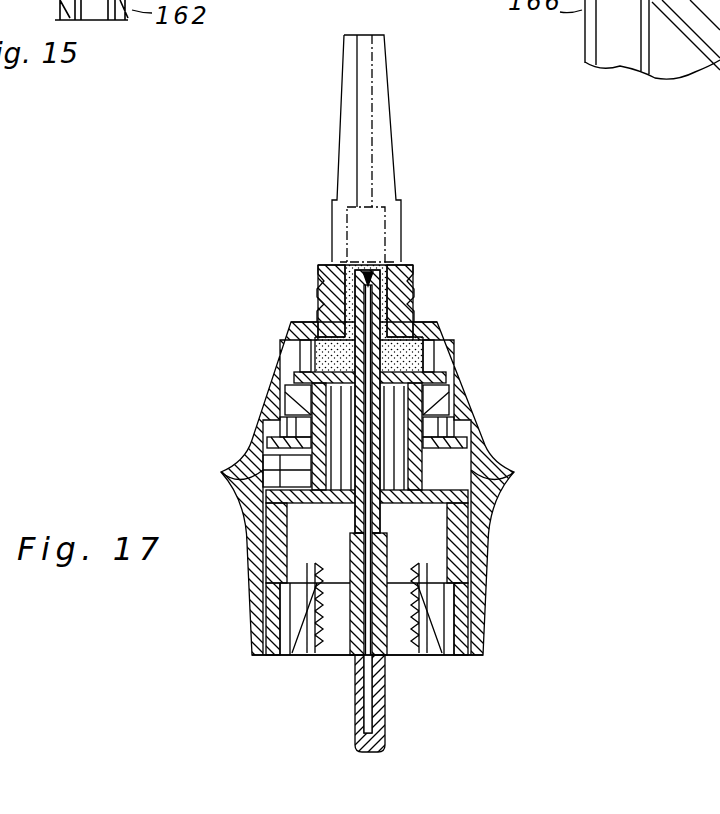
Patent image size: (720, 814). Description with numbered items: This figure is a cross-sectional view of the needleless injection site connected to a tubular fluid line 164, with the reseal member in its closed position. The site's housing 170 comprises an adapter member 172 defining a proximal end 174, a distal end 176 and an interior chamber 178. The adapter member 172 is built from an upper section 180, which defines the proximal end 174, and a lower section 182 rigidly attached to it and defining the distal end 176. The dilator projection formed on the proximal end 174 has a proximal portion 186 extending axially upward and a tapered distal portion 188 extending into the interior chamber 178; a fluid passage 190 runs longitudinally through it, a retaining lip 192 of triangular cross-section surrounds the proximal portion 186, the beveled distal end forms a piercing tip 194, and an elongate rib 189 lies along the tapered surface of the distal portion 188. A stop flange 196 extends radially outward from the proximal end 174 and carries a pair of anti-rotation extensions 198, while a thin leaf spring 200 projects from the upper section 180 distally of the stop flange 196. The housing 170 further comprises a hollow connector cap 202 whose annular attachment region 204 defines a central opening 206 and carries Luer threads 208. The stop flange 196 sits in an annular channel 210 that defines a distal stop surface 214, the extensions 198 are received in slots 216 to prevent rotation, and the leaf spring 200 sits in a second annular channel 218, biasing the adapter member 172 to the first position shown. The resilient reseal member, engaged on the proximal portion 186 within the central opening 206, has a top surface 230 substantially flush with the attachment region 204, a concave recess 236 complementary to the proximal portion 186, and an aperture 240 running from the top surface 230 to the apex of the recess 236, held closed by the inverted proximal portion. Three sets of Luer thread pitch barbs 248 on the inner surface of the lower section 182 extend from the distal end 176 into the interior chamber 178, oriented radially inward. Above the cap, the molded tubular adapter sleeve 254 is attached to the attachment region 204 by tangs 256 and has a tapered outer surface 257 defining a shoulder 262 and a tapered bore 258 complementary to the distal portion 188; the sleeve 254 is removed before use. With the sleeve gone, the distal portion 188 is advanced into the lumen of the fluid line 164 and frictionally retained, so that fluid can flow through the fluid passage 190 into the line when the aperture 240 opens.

The tubular fluid line 164 is at (357, 672).
The housing 170 is at (512, 507).
The adapter member 172 is at (500, 496).
The proximal end 174 is at (443, 358).
The distal end 176 is at (268, 657).
The interior chamber 178 is at (430, 546).
The upper section 180 is at (300, 428).
The lower section 182 is at (470, 634).
The proximal portion 186 is at (402, 302).
The distal portion 188 is at (455, 450).
The elongate rib 189 is at (337, 472).
The fluid passage 190 is at (310, 341).
The retaining lip 192 is at (336, 319).
The piercing tip 194 is at (385, 656).
The stop flange 196 is at (444, 380).
The anti-rotation extensions 198 is at (437, 351).
The leaf spring 200 is at (455, 430).
The connector cap 202 is at (480, 533).
The attachment region 204 is at (316, 291).
The central opening 206 is at (412, 326).
The Luer threads 208 is at (325, 283).
The annular channel 210 is at (298, 400).
The distal stop surface 214 is at (450, 401).
The slots 216 is at (299, 356).
The annular channel 218 is at (283, 442).
The top surface 230 is at (378, 262).
The concave recess 236 is at (348, 264).
The aperture 240 is at (395, 270).
The Luer thread pitch barbs 248 is at (310, 598).
The adapter sleeve 254 is at (398, 126).
The tangs 256 is at (322, 259).
The tapered outer surface 257 is at (342, 97).
The tapered bore 258 is at (370, 78).
The shoulder 262 is at (398, 192).